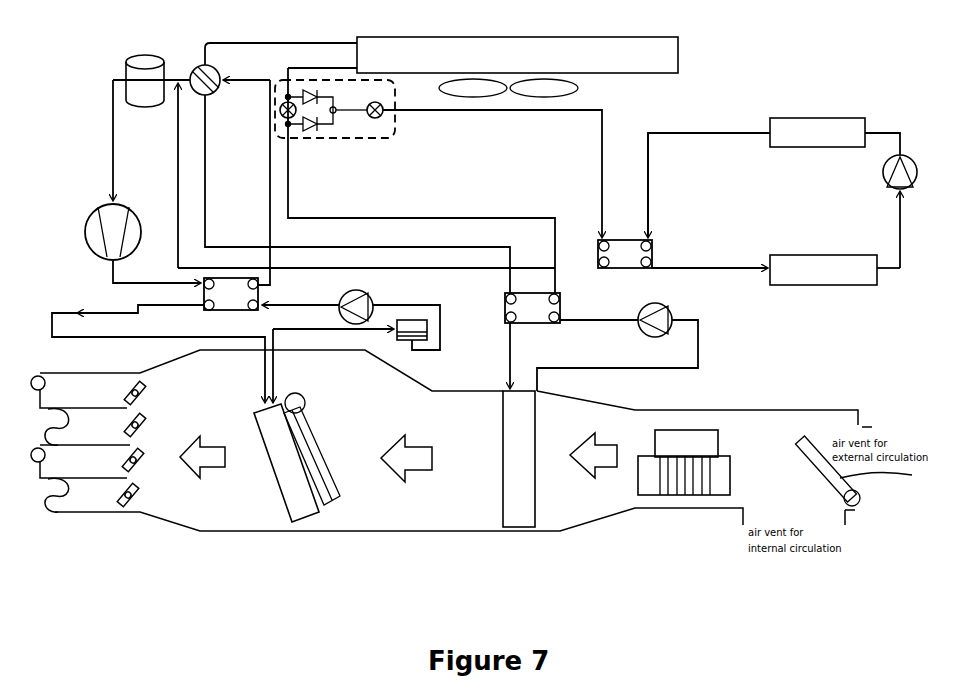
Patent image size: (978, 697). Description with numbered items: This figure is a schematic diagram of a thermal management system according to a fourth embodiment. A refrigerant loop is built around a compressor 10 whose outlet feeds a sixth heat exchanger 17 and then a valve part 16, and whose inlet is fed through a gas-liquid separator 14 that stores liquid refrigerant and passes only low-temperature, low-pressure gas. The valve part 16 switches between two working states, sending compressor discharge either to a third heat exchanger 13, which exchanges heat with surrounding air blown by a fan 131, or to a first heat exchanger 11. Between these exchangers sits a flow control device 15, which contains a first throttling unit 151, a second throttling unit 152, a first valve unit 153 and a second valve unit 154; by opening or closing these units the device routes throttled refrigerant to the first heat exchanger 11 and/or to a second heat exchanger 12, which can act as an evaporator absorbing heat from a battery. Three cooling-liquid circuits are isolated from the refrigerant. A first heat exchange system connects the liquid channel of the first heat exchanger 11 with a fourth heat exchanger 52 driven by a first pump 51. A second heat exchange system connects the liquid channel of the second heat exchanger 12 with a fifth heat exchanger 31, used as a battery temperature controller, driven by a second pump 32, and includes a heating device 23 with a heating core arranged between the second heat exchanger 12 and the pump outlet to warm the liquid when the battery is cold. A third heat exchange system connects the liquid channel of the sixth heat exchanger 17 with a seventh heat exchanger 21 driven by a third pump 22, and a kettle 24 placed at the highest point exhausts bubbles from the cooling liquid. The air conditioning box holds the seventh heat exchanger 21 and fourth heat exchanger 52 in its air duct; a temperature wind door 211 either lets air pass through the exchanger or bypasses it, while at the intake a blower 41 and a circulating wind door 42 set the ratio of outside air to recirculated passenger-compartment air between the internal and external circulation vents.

The compressor 10 is at (90, 236).
The first heat exchanger 11 is at (563, 303).
The second heat exchanger 12 is at (663, 252).
The third heat exchanger 13 is at (658, 60).
The fan 131 is at (570, 85).
The gas-liquid separator 14 is at (141, 62).
The flow control device 15 is at (334, 123).
The first throttling unit 151 is at (384, 118).
The second throttling unit 152 is at (286, 97).
The first valve unit 153 is at (303, 92).
The second valve unit 154 is at (313, 131).
The valve part 16 is at (197, 68).
The sixth heat exchanger 17 is at (259, 288).
The seventh heat exchanger 21 is at (305, 478).
The temperature wind door 211 is at (323, 425).
The third pump 22 is at (370, 278).
The heating device 23 is at (823, 115).
The kettle 24 is at (425, 342).
The fifth heat exchanger 31 is at (825, 250).
The second pump 32 is at (877, 177).
The blower 41 is at (648, 485).
The circulating wind door 42 is at (860, 492).
The first pump 51 is at (670, 310).
The fourth heat exchanger 52 is at (537, 432).